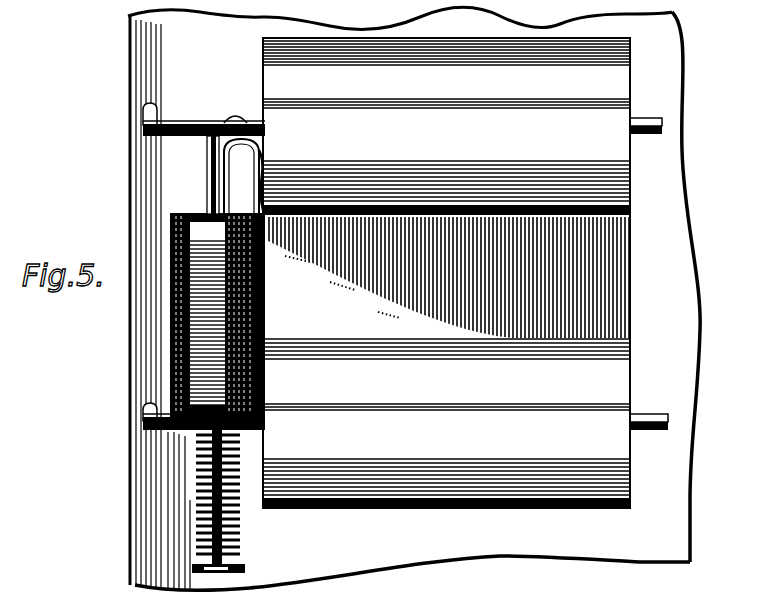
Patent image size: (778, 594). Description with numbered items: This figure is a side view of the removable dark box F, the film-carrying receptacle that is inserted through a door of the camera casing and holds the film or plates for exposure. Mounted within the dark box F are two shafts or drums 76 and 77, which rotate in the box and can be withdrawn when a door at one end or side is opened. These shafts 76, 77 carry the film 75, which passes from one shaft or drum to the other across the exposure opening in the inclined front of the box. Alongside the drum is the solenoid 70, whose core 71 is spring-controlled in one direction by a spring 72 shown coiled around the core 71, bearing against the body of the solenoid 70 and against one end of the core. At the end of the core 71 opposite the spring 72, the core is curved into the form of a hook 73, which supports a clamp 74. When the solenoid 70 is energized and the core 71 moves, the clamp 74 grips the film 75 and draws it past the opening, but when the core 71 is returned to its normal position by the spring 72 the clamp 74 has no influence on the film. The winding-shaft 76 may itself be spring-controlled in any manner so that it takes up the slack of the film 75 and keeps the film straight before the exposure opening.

The dark box F is at (414, 298).
The solenoid 70 is at (215, 301).
The core 71 is at (232, 529).
The spring 72 is at (209, 490).
The hook 73 is at (244, 118).
The clamp 74 is at (257, 183).
The film 75 is at (465, 273).
The winding-shaft 76 is at (195, 125).
The shaft 77 is at (206, 173).